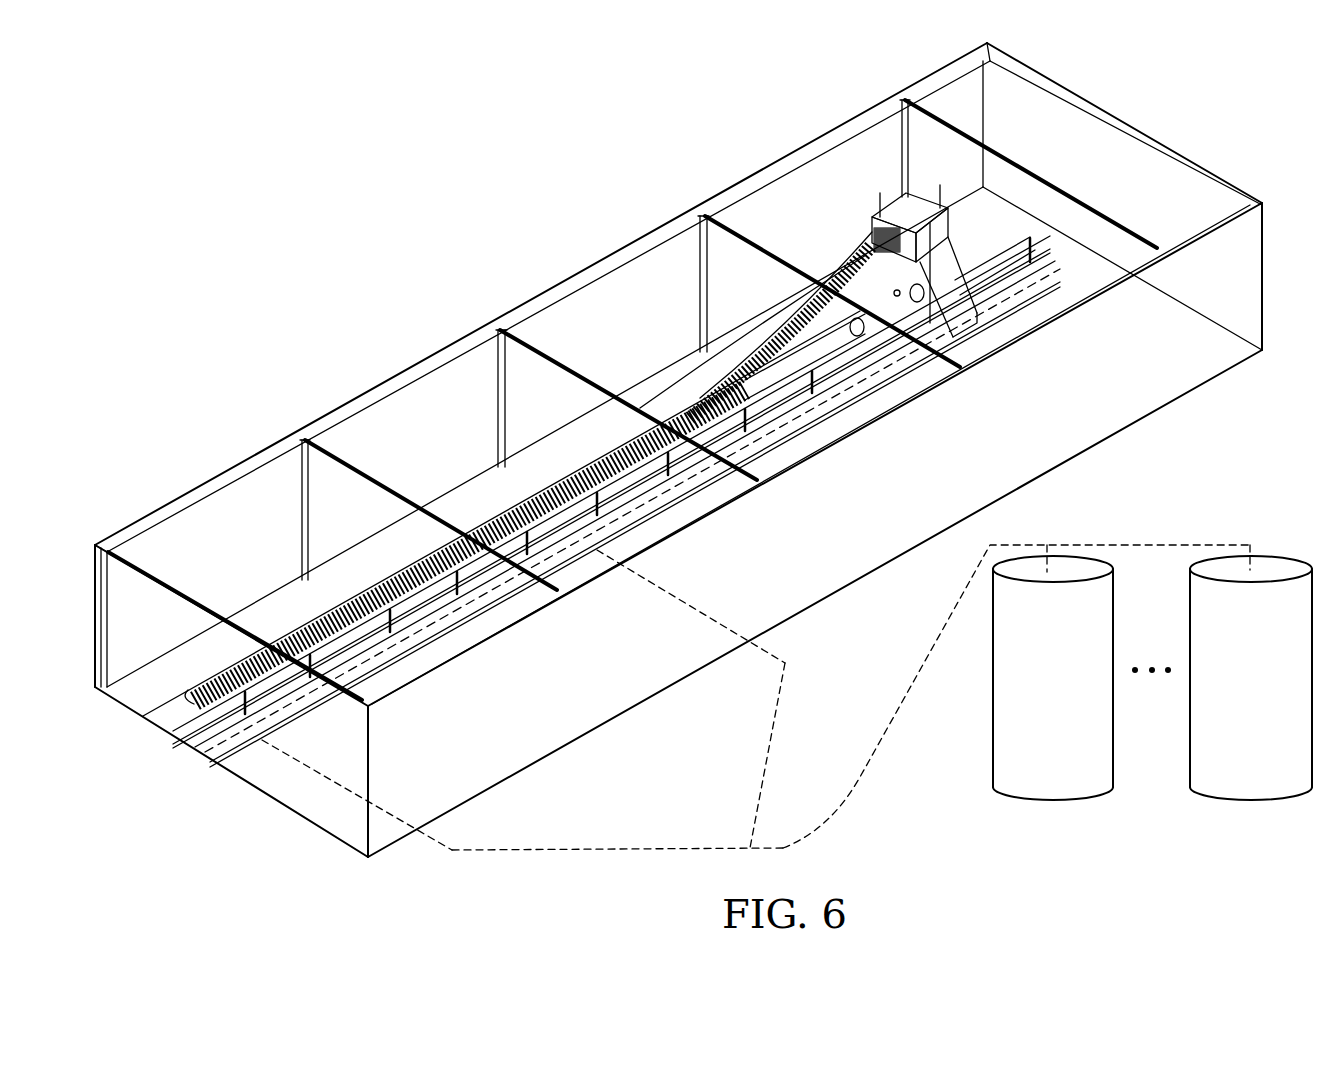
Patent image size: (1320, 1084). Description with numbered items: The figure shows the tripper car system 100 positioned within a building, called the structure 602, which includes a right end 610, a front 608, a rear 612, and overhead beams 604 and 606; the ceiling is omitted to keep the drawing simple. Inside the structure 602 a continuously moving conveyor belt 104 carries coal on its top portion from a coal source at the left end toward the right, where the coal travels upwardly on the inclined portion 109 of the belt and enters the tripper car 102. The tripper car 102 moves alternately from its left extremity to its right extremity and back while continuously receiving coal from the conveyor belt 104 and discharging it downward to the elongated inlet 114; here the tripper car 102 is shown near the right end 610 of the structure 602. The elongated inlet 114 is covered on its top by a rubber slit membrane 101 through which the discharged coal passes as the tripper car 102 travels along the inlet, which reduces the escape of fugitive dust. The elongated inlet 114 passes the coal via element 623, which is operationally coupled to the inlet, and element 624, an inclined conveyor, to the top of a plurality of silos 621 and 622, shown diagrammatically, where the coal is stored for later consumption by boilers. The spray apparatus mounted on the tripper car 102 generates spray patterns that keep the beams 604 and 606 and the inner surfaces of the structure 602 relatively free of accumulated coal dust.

The tripper car system 100 is at (665, 273).
The slit membrane 101 is at (297, 702).
The tripper car 102 is at (918, 196).
The conveyor belt 104 is at (385, 593).
The inclined portion 109 is at (755, 336).
The elongated inlet 114 is at (237, 752).
The structure 602 is at (460, 316).
The overhead beam 604 is at (202, 490).
The overhead beam 606 is at (160, 588).
The front 608 is at (822, 509).
The right end 610 is at (1120, 192).
The rear 612 is at (217, 569).
The silo 621 is at (1032, 644).
The silo 622 is at (1235, 644).
The element 623 is at (782, 660).
The inclined conveyor 624 is at (852, 795).